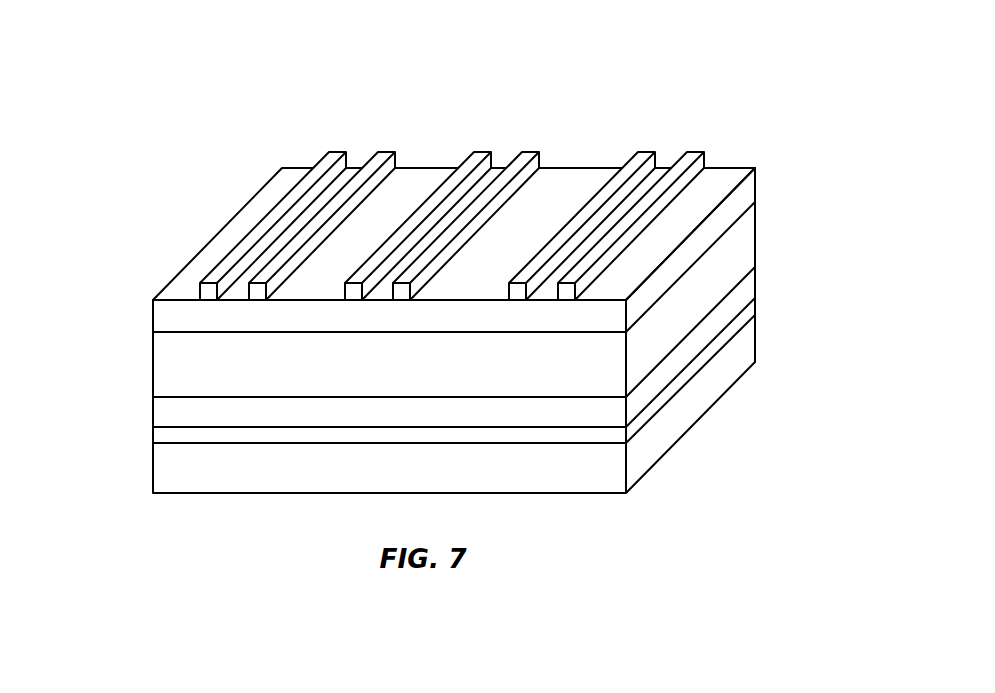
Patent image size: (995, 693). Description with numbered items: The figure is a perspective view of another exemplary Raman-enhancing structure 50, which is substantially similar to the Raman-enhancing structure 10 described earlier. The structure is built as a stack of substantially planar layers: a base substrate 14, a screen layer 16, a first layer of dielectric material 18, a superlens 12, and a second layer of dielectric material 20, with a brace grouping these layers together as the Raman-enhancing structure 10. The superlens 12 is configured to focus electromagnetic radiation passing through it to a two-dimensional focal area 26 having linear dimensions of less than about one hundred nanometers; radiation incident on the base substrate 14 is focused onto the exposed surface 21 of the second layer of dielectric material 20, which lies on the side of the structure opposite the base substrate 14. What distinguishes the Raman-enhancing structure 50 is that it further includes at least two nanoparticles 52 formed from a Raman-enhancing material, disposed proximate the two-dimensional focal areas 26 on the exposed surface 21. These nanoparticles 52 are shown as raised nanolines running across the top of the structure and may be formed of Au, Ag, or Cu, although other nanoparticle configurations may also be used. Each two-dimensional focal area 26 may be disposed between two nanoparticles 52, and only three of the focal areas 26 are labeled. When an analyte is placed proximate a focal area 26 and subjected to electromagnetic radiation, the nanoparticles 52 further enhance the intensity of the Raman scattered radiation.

The Raman-enhancing structure 50 is at (790, 98).
The Raman-enhancing structure 10 is at (67, 253).
The base substrate 14 is at (168, 467).
The screen layer 16 is at (168, 434).
The first layer of dielectric material 18 is at (170, 410).
The superlens 12 is at (182, 365).
The second layer of dielectric material 20 is at (172, 317).
The exposed surface 21 is at (178, 287).
The two-dimensional focal area 26 is at (340, 183).
The nanoparticles 52 is at (333, 152).